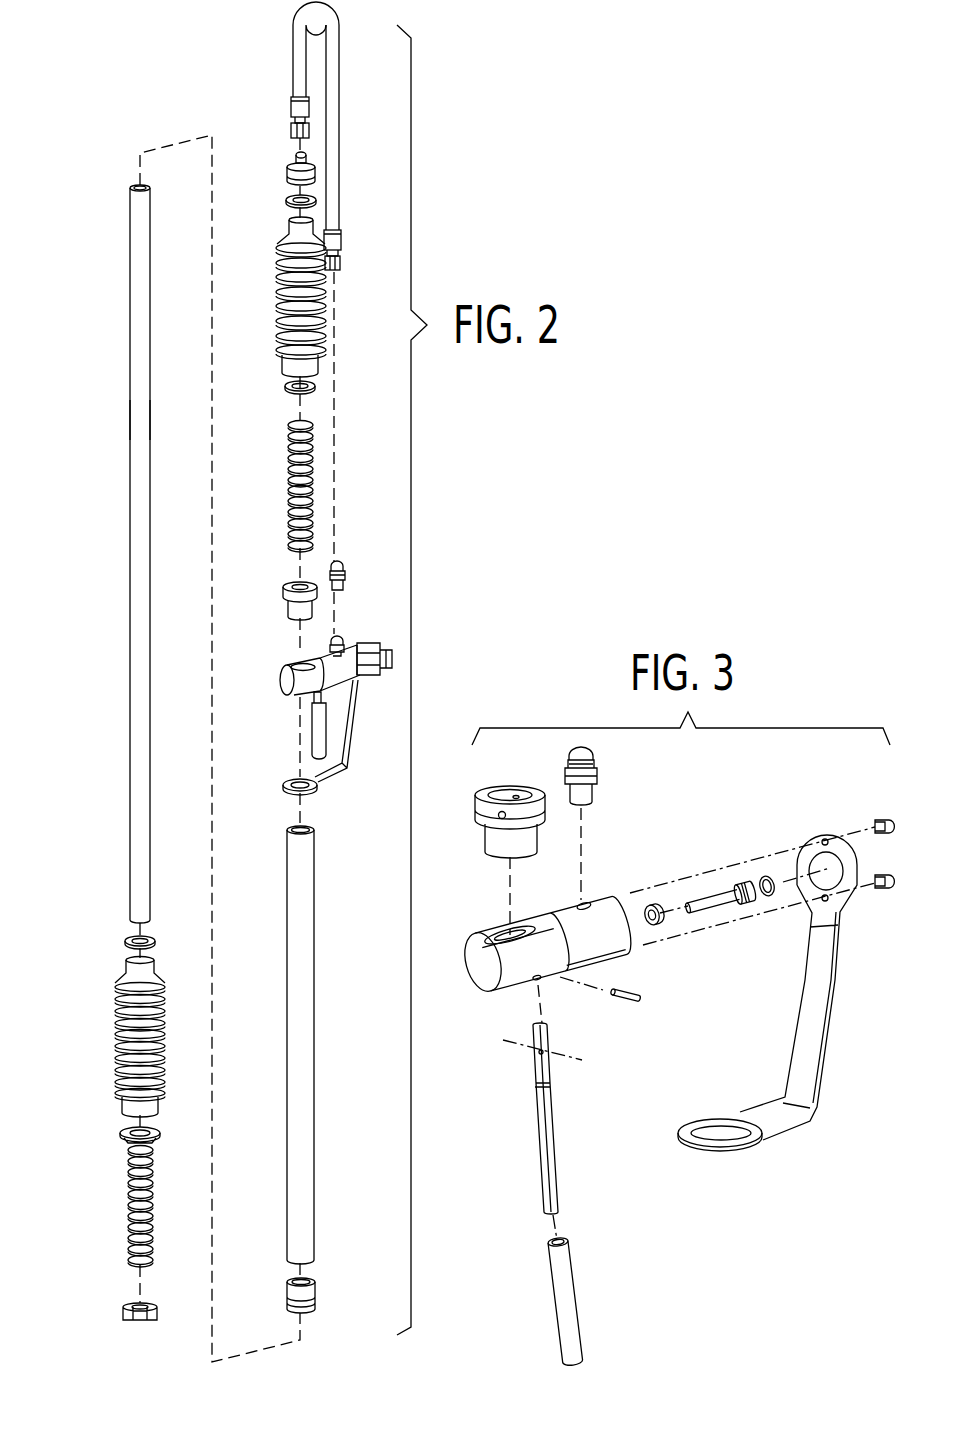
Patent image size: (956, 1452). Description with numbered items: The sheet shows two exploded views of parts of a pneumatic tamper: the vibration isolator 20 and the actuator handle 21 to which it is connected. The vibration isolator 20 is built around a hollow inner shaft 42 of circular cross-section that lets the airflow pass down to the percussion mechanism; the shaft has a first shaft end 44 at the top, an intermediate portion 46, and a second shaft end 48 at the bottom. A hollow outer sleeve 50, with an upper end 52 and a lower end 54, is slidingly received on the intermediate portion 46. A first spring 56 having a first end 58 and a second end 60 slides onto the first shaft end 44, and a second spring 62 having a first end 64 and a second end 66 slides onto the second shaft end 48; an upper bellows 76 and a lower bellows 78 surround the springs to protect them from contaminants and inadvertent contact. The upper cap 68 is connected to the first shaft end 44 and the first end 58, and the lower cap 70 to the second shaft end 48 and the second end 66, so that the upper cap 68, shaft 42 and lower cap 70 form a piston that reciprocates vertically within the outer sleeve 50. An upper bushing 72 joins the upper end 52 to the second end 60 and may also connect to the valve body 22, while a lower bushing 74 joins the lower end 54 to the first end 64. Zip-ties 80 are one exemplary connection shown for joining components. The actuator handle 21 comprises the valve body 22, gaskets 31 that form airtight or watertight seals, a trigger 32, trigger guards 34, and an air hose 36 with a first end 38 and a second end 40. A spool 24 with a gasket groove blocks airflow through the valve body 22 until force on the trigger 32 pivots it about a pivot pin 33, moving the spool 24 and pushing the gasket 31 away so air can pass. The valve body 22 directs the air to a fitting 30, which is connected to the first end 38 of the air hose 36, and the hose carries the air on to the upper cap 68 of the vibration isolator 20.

In FIG. 2, the vibration isolator 20 is at (86, 757).
In FIG. 2, the actuator handle 21 is at (370, 790).
In FIG. 3, the actuator handle 21 is at (715, 1202).
In FIG. 2, the valve body 22 is at (283, 684).
In FIG. 3, the valve body 22 is at (477, 967).
In FIG. 3, the spool 24 is at (713, 890).
In FIG. 2, the fitting 30 is at (344, 576).
In FIG. 3, the fitting 30 is at (597, 768).
In FIG. 3, the gaskets 31 is at (653, 904).
In FIG. 3, the trigger 32 is at (545, 1123).
In FIG. 3, the pivot pin 33 is at (623, 1000).
In FIG. 2, the trigger guards 34 is at (318, 738).
In FIG. 3, the trigger guards 34 is at (810, 1030).
In FIG. 2, the air hose 36 is at (335, 118).
In FIG. 2, the first end 38 is at (335, 220).
In FIG. 2, the second end 40 is at (299, 57).
In FIG. 2, the hollow inner shaft 42 is at (135, 485).
In FIG. 2, the first shaft end 44 is at (138, 203).
In FIG. 2, the intermediate portion 46 is at (135, 418).
In FIG. 2, the second shaft end 48 is at (137, 915).
In FIG. 2, the outer sleeve 50 is at (295, 1063).
In FIG. 2, the upper end 52 is at (292, 895).
In FIG. 2, the lower end 54 is at (295, 1240).
In FIG. 2, the first spring 56 is at (291, 500).
In FIG. 2, the first end 58 is at (290, 424).
In FIG. 2, the second end 60 is at (291, 540).
In FIG. 2, the second spring 62 is at (128, 1216).
In FIG. 2, the first end 64 is at (128, 1150).
In FIG. 2, the second end 66 is at (128, 1258).
In FIG. 2, the upper cap 68 is at (296, 163).
In FIG. 2, the lower cap 70 is at (124, 1313).
In FIG. 2, the upper bushing 72 is at (284, 607).
In FIG. 3, the upper bushing 72 is at (485, 840).
In FIG. 2, the lower bushing 74 is at (312, 1290).
In FIG. 2, the upper bellows 76 is at (281, 294).
In FIG. 2, the lower bellows 78 is at (122, 1055).
In FIG. 2, the zip-ties 80 is at (288, 199).